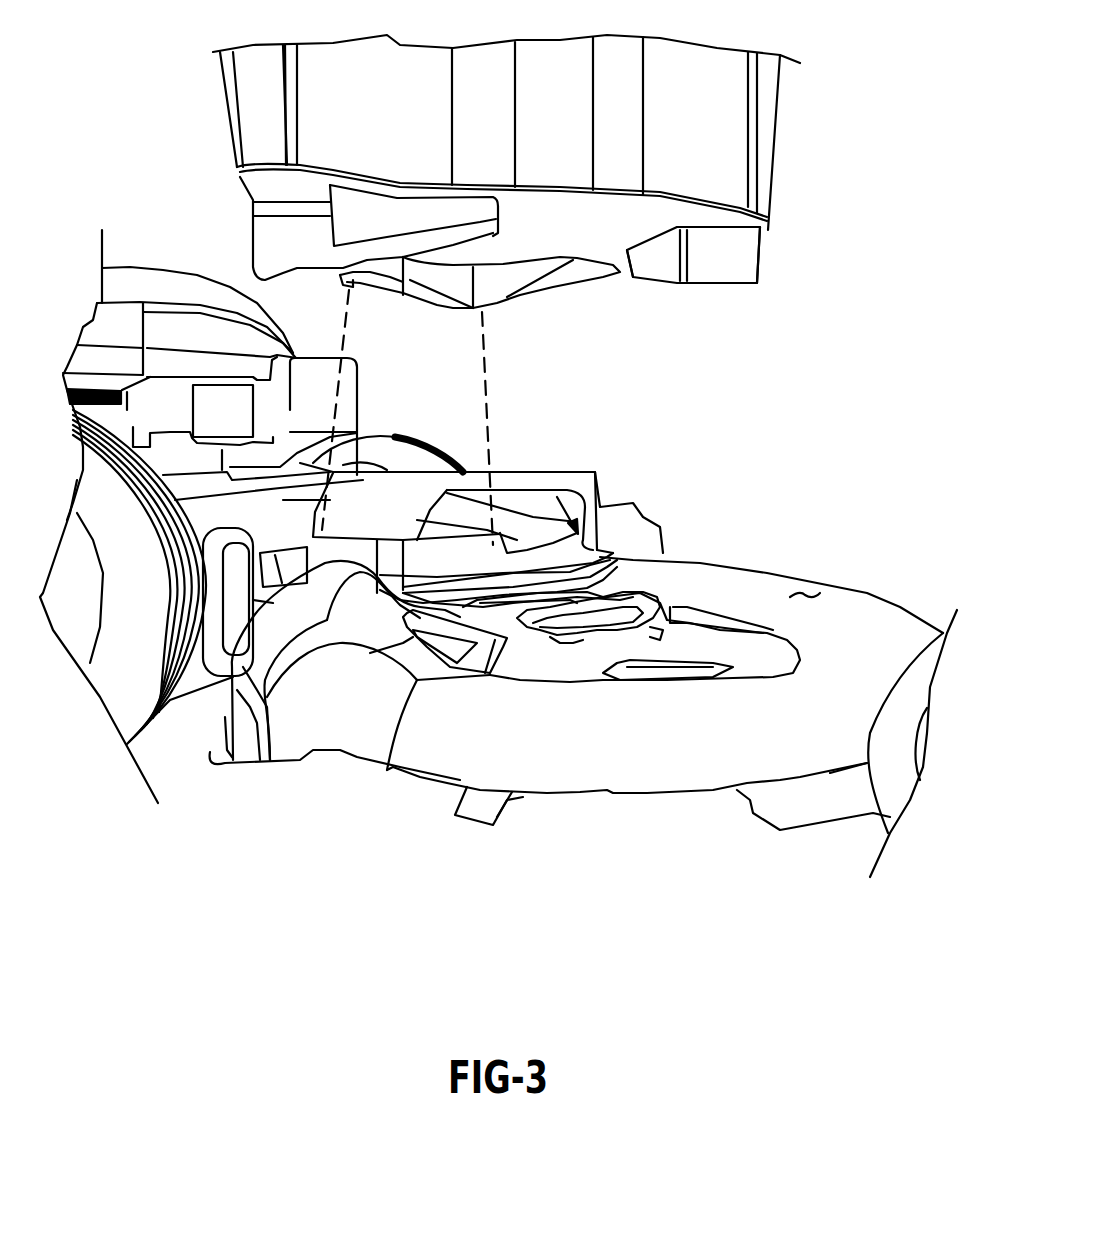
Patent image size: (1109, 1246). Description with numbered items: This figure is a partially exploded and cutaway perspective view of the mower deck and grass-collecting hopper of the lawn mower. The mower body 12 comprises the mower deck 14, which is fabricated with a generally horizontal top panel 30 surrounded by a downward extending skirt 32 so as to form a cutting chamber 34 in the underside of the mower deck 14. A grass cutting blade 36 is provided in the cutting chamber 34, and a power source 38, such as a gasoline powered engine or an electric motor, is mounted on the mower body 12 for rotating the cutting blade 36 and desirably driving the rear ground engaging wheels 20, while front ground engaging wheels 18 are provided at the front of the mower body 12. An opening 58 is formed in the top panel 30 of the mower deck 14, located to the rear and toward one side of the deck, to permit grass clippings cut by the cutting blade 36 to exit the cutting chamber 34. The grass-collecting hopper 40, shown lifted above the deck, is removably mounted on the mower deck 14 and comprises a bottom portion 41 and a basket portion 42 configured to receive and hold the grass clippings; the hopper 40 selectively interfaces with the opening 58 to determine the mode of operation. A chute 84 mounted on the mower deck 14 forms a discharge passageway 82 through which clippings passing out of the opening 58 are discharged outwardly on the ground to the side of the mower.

The mower body 12 is at (763, 573).
The mower deck 14 is at (713, 563).
The front ground engaging wheels 18 is at (880, 813).
The rear ground engaging wheels 20 is at (153, 717).
The top panel 30 is at (807, 592).
The skirt 32 is at (230, 750).
The cutting chamber 34 is at (643, 798).
The grass cutting blade 36 is at (513, 800).
The power source 38 is at (132, 283).
The grass-collecting hopper 40 is at (783, 90).
The bottom portion 41 is at (623, 265).
The basket portion 42 is at (285, 105).
The opening 58 is at (402, 508).
The discharge passageway 82 is at (618, 552).
The chute 84 is at (545, 473).